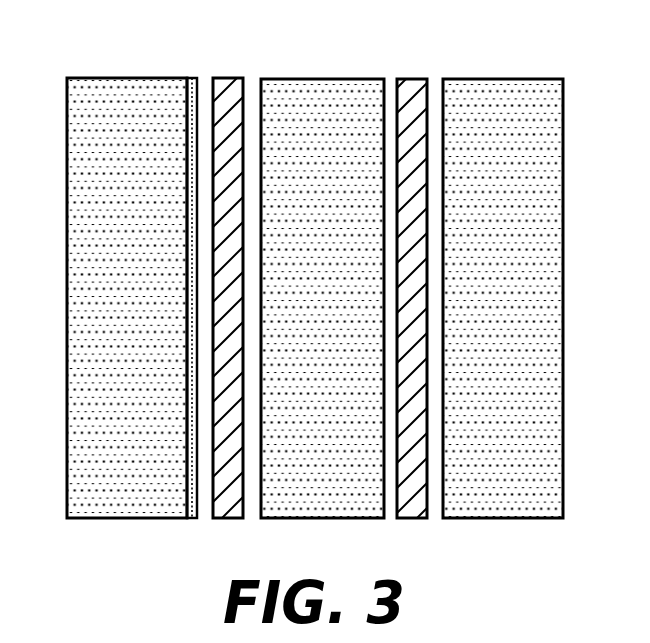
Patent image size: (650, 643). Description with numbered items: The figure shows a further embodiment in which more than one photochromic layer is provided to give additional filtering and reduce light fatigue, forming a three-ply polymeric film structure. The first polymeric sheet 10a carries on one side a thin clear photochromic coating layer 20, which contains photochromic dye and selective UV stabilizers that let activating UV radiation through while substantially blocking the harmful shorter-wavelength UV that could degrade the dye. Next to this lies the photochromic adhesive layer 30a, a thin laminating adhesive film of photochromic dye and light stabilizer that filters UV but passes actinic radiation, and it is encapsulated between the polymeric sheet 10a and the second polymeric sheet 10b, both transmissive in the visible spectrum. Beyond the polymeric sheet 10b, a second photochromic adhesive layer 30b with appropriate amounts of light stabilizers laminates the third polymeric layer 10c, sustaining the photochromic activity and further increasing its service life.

The polymeric sheet 10a is at (128, 78).
The photochromic coating layer 20 is at (193, 78).
The photochromic adhesive layer 30a is at (232, 78).
The polymeric sheet 10b is at (331, 79).
The second photochromic adhesive layer 30b is at (414, 79).
The third polymeric layer 10c is at (517, 79).